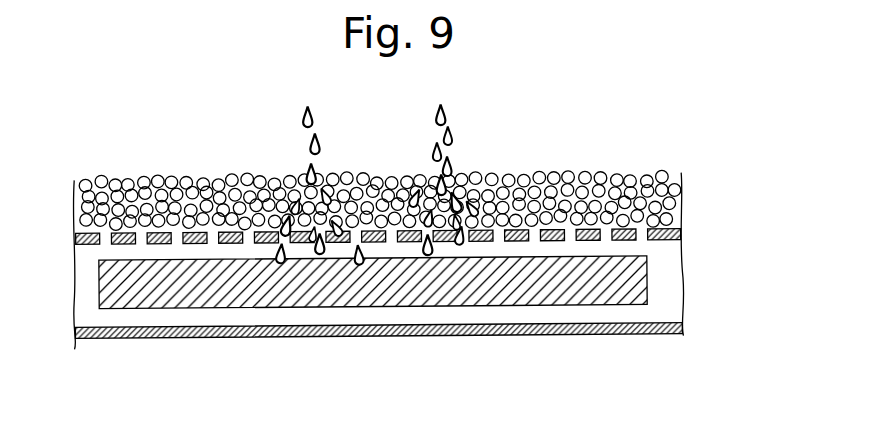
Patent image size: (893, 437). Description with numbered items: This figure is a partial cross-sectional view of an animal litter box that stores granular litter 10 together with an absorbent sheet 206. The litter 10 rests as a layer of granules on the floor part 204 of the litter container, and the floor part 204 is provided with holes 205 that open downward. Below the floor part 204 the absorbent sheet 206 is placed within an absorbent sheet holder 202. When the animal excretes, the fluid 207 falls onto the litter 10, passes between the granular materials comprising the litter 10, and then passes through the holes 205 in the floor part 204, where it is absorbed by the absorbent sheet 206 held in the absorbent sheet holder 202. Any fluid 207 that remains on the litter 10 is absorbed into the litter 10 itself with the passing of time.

The litter 10 is at (634, 190).
The absorbent sheet holder 202 is at (650, 334).
The floor part 204 is at (664, 228).
The holes 205 is at (640, 241).
The absorbent sheet 206 is at (647, 287).
The fluid 207 is at (454, 142).